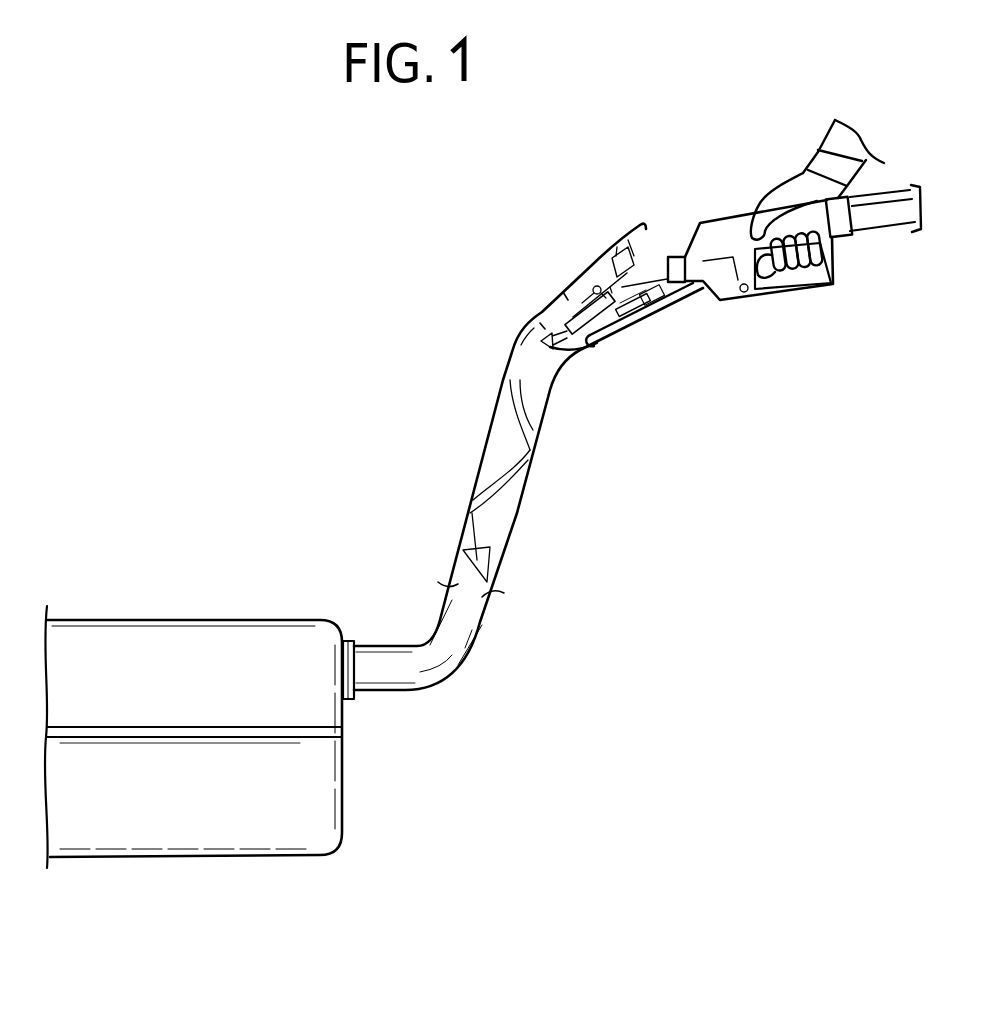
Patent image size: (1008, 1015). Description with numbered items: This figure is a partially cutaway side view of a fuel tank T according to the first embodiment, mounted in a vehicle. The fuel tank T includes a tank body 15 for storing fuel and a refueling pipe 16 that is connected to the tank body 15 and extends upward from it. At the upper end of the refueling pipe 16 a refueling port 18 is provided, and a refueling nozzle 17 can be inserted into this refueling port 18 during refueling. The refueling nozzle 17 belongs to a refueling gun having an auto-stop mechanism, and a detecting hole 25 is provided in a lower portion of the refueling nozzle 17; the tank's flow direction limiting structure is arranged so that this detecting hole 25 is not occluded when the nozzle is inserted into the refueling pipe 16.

The fuel tank T is at (232, 709).
The tank body 15 is at (330, 762).
The refueling pipe 16 is at (518, 512).
The refueling nozzle 17 is at (603, 265).
The refueling port 18 is at (657, 250).
The detecting hole 25 is at (600, 327).